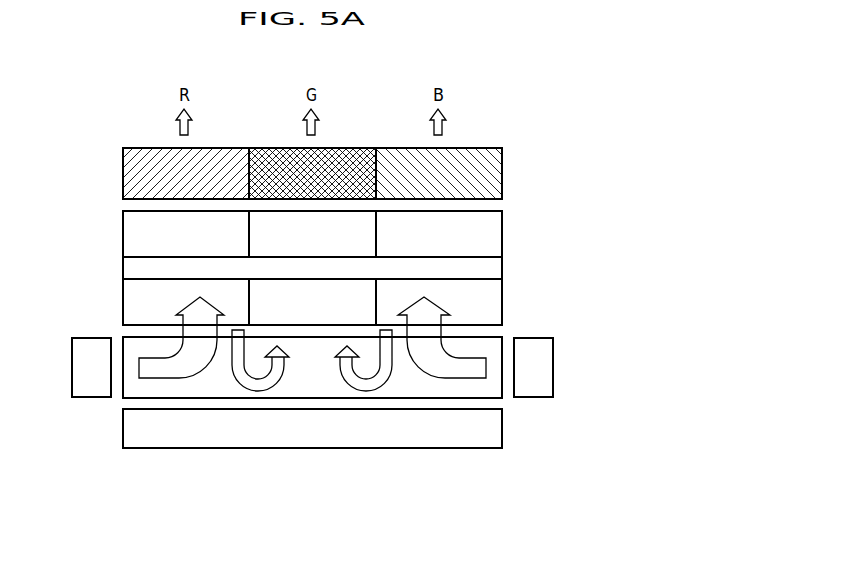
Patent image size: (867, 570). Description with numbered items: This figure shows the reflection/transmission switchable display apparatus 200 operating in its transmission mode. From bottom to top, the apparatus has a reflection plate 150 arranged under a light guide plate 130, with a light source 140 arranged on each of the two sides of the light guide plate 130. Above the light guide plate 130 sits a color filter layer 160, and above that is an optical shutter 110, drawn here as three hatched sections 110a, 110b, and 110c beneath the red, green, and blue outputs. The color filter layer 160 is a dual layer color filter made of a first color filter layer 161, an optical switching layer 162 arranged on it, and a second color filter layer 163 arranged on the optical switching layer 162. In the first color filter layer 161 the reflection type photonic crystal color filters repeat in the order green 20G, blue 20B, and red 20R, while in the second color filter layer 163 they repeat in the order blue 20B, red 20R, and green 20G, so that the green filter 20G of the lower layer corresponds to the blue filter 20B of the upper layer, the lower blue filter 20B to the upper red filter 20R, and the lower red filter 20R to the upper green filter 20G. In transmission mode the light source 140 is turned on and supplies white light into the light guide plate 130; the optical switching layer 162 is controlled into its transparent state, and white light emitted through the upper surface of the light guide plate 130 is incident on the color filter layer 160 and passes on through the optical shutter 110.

The reflection/transmission switchable display apparatus 200 is at (101, 118).
The optical shutter 110 is at (350, 154).
The red color filter 110a is at (222, 151).
The green color filter 110b is at (356, 151).
The blue color filter 110c is at (489, 151).
The third reflection type photonic crystal color filter 20R is at (262, 236).
The second reflection type photonic crystal color filter 20G is at (127, 316).
The first reflection type photonic crystal color filter 20B is at (127, 236).
The color filter layer 160 is at (522, 268).
The first color filter layer 161 is at (122, 292).
The optical switching layer 162 is at (122, 270).
The second color filter layer 163 is at (122, 250).
The light guide plate 130 is at (497, 392).
The light source 140 is at (78, 366).
The reflection plate 150 is at (483, 442).